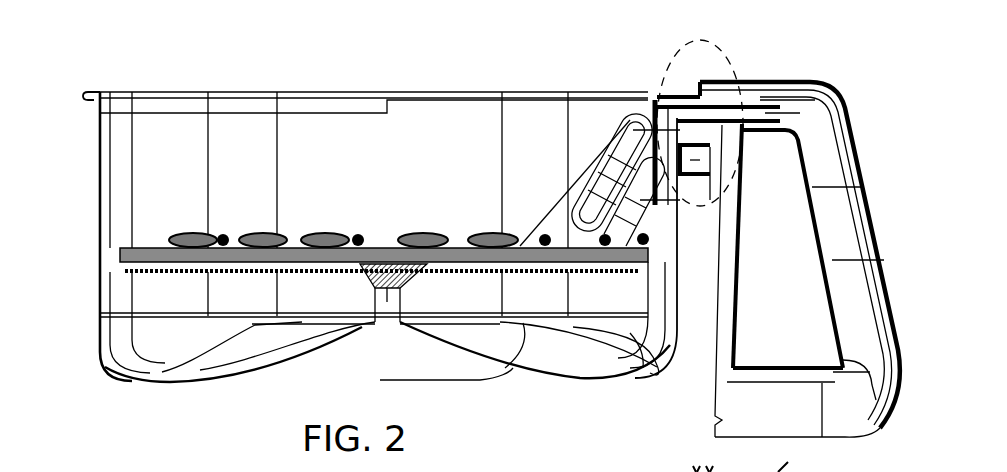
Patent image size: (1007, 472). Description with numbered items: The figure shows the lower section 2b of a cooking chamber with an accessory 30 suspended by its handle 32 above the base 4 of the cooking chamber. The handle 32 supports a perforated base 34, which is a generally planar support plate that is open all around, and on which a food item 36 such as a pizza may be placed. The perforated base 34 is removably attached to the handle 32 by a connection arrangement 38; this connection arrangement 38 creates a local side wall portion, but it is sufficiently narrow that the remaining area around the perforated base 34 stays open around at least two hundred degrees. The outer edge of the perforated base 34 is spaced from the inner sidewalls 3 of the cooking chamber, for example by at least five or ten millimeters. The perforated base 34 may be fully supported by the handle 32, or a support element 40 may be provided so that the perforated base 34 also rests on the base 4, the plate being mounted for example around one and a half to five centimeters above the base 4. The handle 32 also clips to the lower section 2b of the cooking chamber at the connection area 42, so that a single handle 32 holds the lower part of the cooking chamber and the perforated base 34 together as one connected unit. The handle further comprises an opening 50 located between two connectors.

The lower section of the cooking chamber 2b is at (92, 252).
The inner sidewalls 3 is at (100, 167).
The base of the cooking chamber 4 is at (120, 370).
The accessory 30 is at (445, 198).
The handle 32 is at (862, 182).
The perforated base 34 is at (193, 278).
The food item 36 is at (387, 243).
The connection arrangement 38 is at (567, 195).
The support element 40 is at (375, 300).
The connection area 42 is at (660, 80).
The opening 50 is at (648, 235).